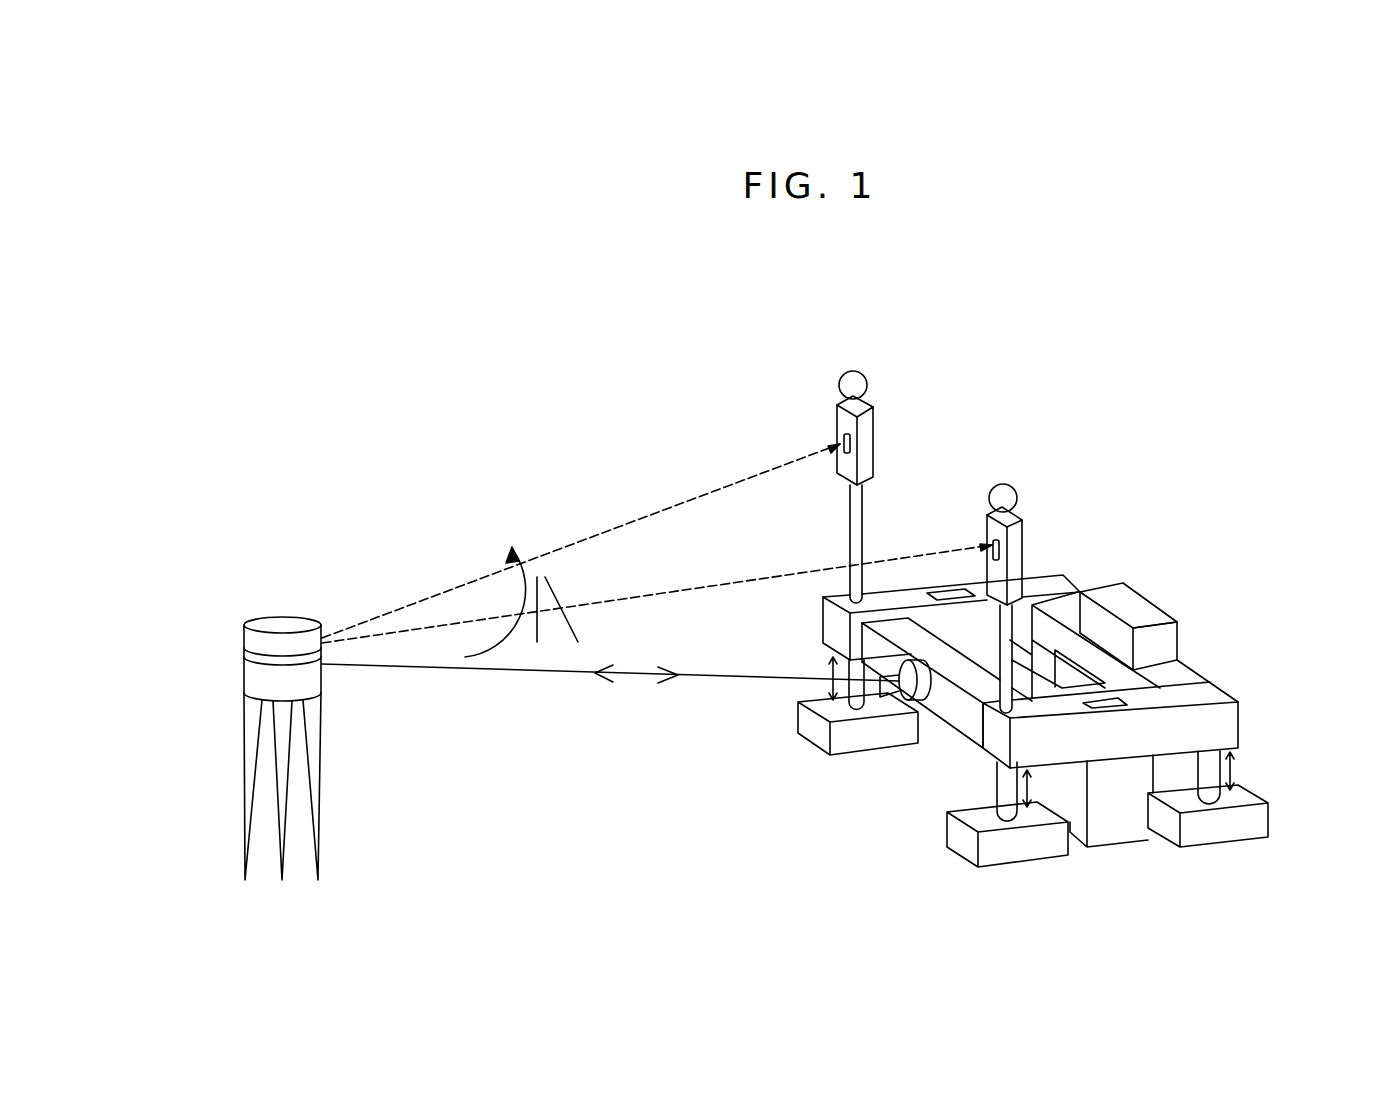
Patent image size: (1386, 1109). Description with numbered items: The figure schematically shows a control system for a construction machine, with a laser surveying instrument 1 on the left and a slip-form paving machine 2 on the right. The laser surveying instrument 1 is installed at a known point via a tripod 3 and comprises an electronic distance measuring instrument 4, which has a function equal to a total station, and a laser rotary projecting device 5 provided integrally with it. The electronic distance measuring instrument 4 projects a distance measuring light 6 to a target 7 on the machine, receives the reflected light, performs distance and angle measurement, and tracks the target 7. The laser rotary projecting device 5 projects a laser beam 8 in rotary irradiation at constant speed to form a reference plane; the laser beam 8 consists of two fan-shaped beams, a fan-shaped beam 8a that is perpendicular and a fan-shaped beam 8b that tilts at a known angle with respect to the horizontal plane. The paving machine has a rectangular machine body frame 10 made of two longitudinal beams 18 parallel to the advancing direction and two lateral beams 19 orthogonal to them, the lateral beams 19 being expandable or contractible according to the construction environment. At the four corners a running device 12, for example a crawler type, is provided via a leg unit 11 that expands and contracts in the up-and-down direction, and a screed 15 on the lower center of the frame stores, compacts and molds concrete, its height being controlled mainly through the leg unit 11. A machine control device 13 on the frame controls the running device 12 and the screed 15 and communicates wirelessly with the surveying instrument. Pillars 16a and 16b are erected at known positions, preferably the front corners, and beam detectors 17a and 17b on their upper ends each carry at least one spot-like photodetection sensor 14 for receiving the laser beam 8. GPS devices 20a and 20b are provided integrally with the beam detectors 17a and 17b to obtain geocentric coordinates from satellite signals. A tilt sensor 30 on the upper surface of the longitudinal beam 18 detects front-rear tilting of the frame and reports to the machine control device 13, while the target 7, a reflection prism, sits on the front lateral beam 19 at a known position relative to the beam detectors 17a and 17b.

The laser surveying instrument 1 is at (340, 699).
The slip-form paving machine 2 is at (1126, 508).
The tripod 3 is at (321, 755).
The electronic distance measuring instrument 4 is at (321, 670).
The laser rotary projecting device 5 is at (302, 612).
The distance measuring light 6 is at (718, 677).
The target 7 is at (933, 694).
The laser beam 8 is at (620, 525).
The fan-shaped beam 8a is at (537, 628).
The fan-shaped beam 8b is at (553, 588).
The machine body frame 10 is at (1238, 712).
The leg unit 11 is at (1231, 770).
The running device 12 is at (1195, 849).
The machine control device 13 is at (1148, 602).
The photodetection sensor 14 is at (845, 432).
The screed 15 is at (1111, 849).
The pillar 16a is at (998, 620).
The pillar 16b is at (848, 535).
The beam detector 17a is at (986, 510).
The beam detector 17b is at (849, 415).
The longitudinal beam 18 is at (1148, 700).
The lateral beam 19 is at (887, 650).
The GPS device 20a is at (1018, 495).
The GPS device 20b is at (853, 371).
The tilt sensor 30 is at (958, 588).